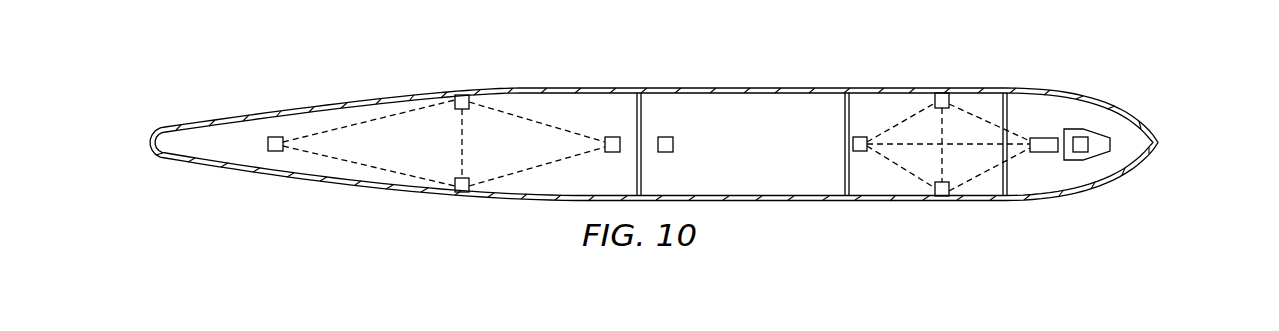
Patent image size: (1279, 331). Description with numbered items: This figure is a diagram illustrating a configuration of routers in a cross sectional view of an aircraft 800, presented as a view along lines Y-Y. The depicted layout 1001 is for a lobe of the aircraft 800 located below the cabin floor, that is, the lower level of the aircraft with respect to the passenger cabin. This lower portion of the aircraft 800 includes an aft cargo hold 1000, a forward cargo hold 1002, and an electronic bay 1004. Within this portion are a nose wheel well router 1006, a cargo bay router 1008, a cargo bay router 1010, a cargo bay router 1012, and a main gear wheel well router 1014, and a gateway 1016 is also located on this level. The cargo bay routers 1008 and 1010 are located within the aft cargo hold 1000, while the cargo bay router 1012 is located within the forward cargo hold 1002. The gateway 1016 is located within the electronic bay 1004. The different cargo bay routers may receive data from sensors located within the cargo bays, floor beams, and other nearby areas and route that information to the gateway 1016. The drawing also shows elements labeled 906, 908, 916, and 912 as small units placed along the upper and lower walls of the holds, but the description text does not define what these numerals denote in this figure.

The aft cargo hold 1000 is at (325, 170).
The layout 1001 is at (214, 91).
The aircraft 800 is at (391, 96).
The forward cargo hold 1002 is at (882, 102).
The electronic bay 1004 is at (1137, 152).
The nose wheel well router 1006 is at (1079, 137).
The cargo bay router 1008 is at (276, 137).
The cargo bay router 1010 is at (612, 137).
The cargo bay router 1012 is at (860, 152).
The main gear wheel well router 1014 is at (673, 144).
The gateway 1016 is at (1043, 152).
The transducer 906 is at (462, 95).
The transducer 908 is at (460, 192).
The transducer 916 is at (943, 93).
The transducer 912 is at (943, 196).